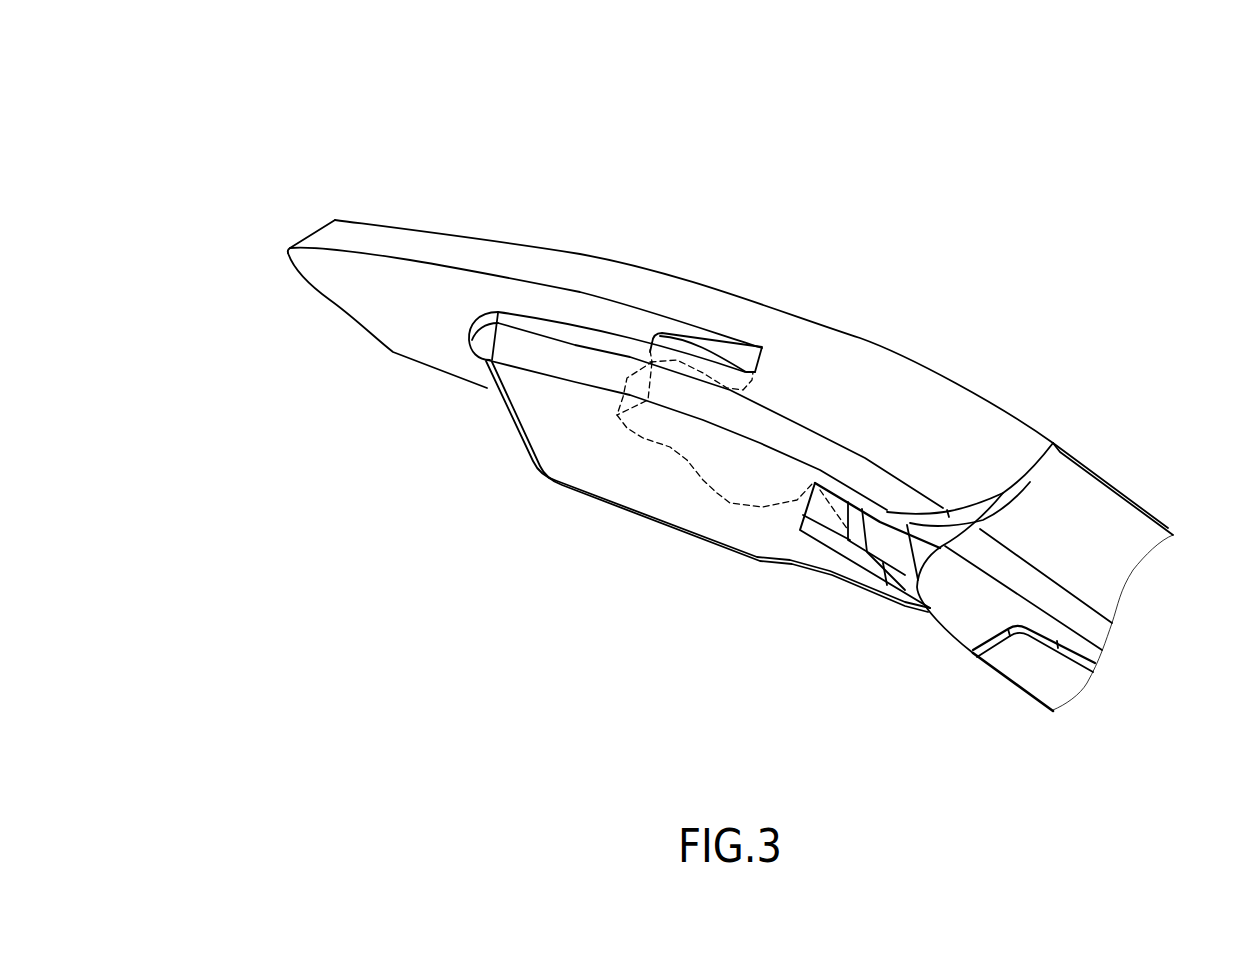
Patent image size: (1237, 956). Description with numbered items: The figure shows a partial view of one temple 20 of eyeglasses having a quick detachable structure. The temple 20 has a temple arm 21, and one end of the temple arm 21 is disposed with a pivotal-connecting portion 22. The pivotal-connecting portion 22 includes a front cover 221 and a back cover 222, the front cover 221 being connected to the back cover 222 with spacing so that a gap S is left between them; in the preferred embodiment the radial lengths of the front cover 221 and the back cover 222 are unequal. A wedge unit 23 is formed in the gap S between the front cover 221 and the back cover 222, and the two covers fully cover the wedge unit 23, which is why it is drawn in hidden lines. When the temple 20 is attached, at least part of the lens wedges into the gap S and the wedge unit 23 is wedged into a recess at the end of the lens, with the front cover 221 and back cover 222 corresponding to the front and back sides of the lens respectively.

The temple 20 is at (242, 77).
The temple arm 21 is at (1097, 507).
The pivotal-connecting portion 22 is at (582, 162).
The front cover 221 is at (530, 347).
The back cover 222 is at (488, 258).
The wedge unit 23 is at (730, 463).
The gap S is at (577, 320).